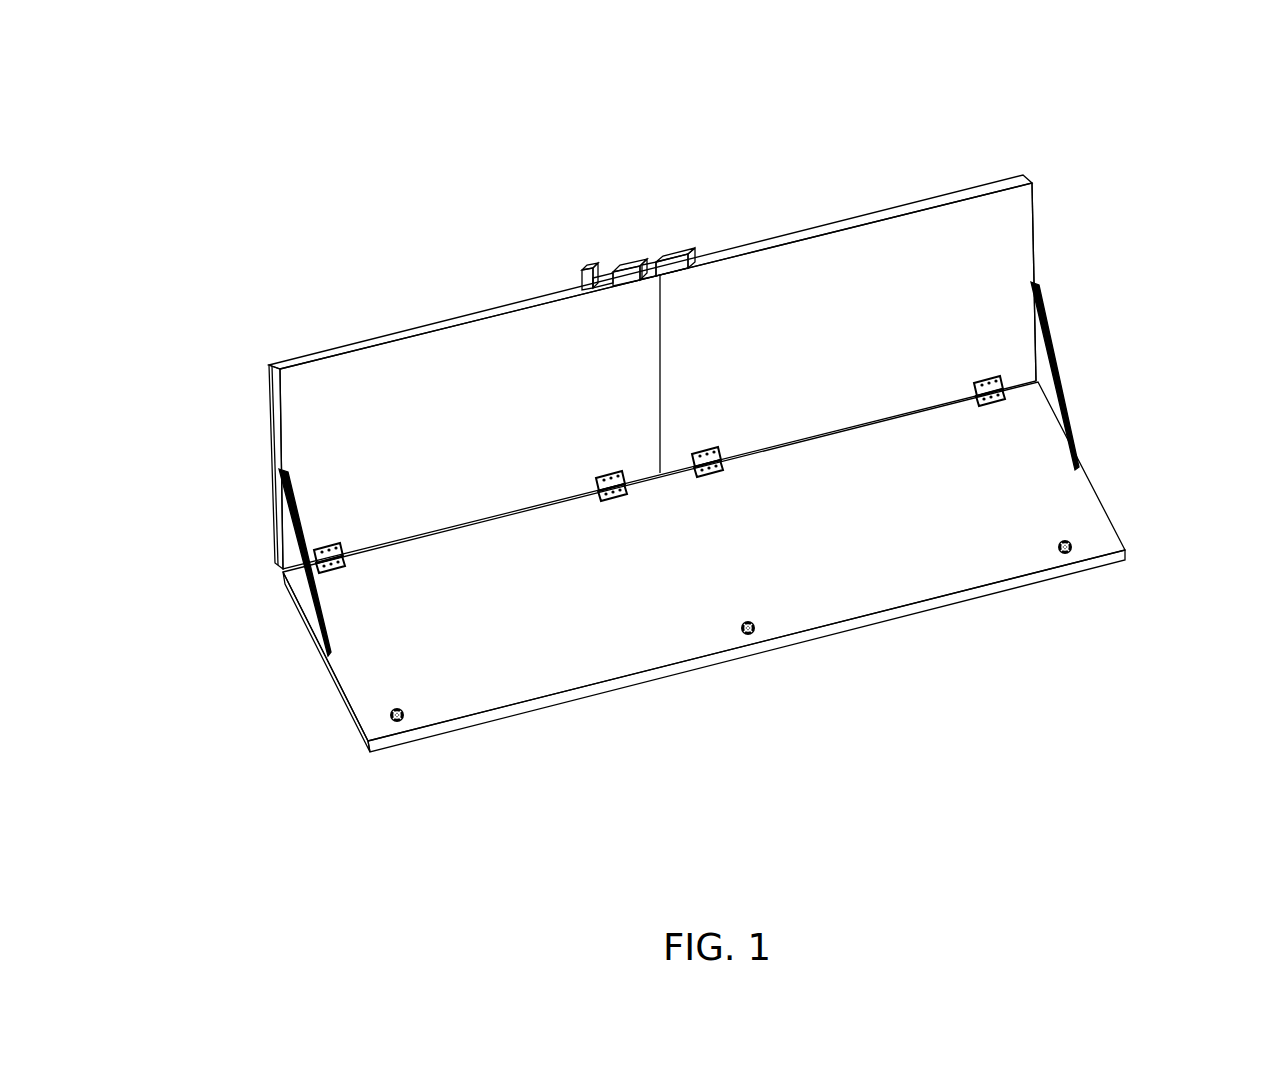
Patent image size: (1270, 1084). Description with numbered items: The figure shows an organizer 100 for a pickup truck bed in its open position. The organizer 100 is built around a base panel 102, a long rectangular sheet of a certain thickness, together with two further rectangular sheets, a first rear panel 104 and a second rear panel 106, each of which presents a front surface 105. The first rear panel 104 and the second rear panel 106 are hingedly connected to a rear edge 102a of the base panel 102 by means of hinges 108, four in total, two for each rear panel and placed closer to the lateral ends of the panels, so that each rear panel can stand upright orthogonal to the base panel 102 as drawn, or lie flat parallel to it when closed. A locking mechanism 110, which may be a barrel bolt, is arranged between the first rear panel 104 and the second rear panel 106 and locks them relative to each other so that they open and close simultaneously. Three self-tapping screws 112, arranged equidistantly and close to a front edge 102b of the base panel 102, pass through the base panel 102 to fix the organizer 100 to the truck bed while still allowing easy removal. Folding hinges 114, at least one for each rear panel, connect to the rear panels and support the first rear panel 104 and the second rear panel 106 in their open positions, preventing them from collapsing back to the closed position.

The organizer 100 is at (1122, 104).
The base panel 102 is at (744, 457).
The rear edge 102a is at (793, 432).
The front edge 102b is at (965, 600).
The first rear panel 104 is at (268, 422).
The front surface 105 is at (400, 355).
The second rear panel 106 is at (1036, 237).
The hinges 108 is at (314, 562).
The locking mechanism 110 is at (623, 262).
The self-tapping screws 112 is at (400, 722).
The folding hinges 114 is at (300, 551).